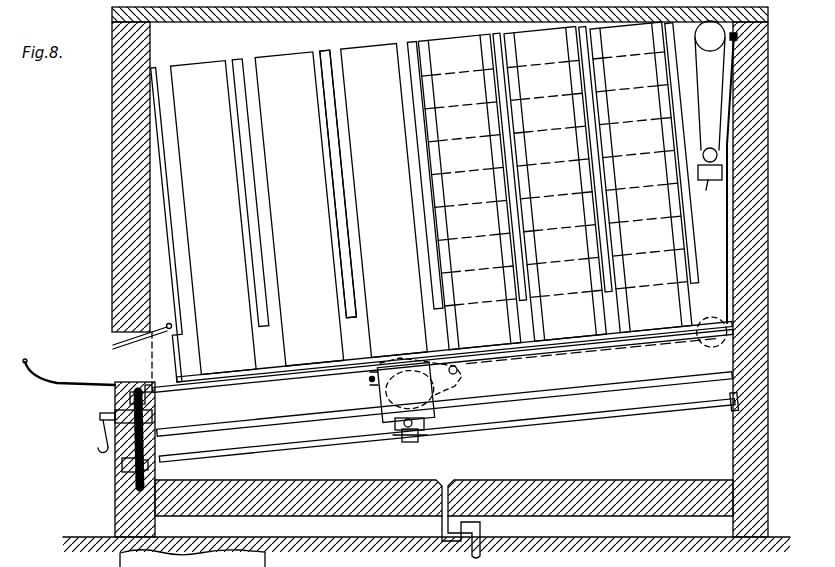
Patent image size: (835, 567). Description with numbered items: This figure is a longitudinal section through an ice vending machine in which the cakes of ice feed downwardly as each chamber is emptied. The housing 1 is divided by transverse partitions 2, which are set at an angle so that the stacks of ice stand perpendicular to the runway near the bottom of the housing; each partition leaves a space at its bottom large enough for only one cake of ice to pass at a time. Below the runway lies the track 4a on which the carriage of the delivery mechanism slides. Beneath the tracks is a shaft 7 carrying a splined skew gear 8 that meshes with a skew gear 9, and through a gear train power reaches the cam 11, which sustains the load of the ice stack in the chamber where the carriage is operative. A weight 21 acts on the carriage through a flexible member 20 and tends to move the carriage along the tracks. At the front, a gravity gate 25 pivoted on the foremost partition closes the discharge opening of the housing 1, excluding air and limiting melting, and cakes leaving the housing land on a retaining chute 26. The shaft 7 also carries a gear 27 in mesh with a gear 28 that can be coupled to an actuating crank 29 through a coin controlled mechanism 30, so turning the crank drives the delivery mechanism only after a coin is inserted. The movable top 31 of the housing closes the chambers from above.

The housing 1 is at (662, 472).
The transverse partitions 2 is at (323, 52).
The track 4a is at (343, 420).
The shaft 7 is at (548, 410).
The skew gear 8 is at (415, 442).
The skew gear 9 is at (397, 430).
The cam 11 is at (456, 378).
The flexible member 20 is at (727, 272).
The weight 21 is at (709, 178).
The gravity gate 25 is at (175, 353).
The retaining chute 26 is at (56, 381).
The gear 27 is at (148, 470).
The gear 28 is at (152, 413).
The actuating crank 29 is at (104, 437).
The coin controlled mechanism 30 is at (127, 396).
The movable top 31 is at (372, 21).